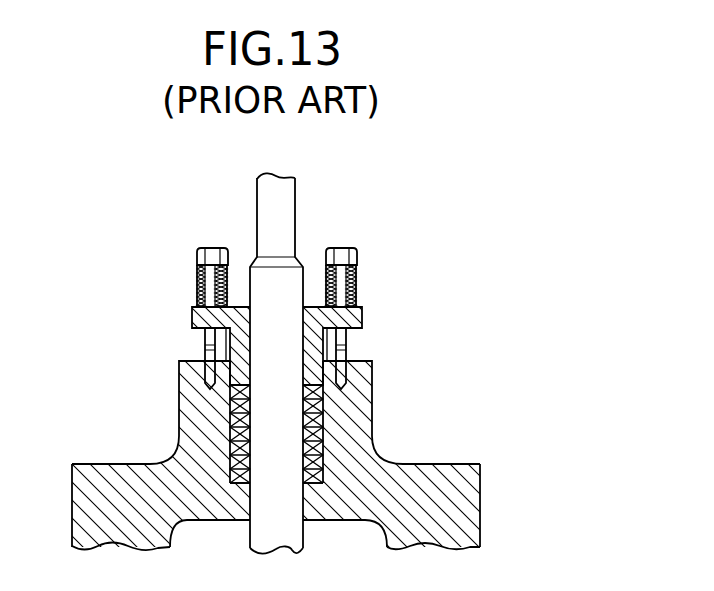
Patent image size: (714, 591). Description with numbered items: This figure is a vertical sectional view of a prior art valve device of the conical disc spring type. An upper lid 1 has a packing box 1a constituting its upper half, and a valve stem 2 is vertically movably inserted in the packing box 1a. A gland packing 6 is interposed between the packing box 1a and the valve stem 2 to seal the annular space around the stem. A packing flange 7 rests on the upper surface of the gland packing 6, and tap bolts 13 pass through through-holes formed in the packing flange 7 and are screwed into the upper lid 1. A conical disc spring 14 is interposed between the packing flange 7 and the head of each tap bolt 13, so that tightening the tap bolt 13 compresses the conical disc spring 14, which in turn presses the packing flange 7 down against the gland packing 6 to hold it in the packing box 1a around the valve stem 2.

The upper lid 1 is at (463, 505).
The packing box 1a is at (227, 460).
The valve stem 2 is at (288, 500).
The gland packing 6 is at (322, 430).
The packing flange 7 is at (362, 318).
The tap bolt 13 is at (196, 258).
The conical disc spring 14 is at (198, 288).